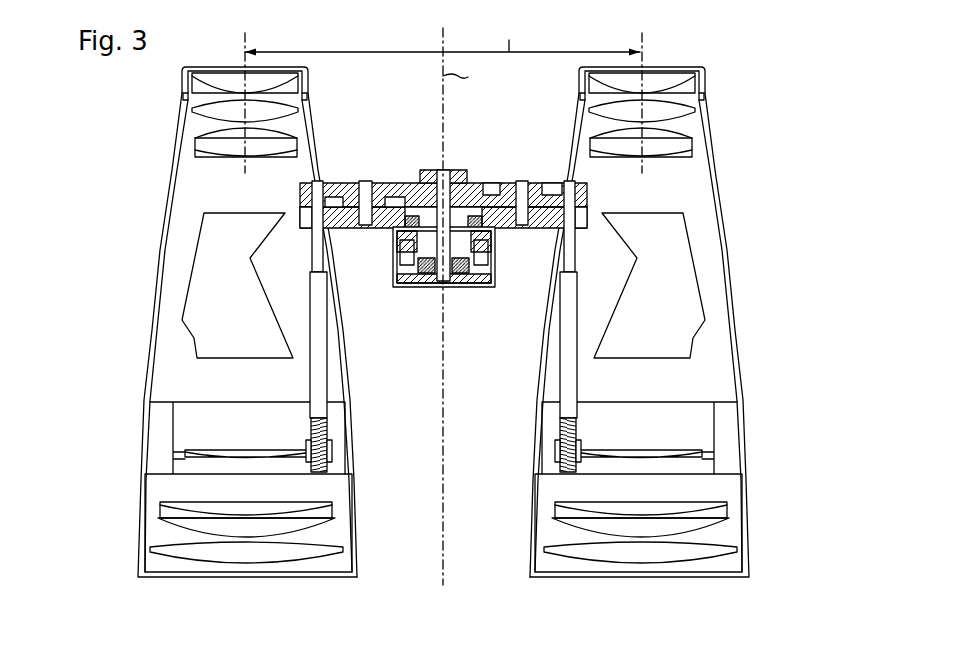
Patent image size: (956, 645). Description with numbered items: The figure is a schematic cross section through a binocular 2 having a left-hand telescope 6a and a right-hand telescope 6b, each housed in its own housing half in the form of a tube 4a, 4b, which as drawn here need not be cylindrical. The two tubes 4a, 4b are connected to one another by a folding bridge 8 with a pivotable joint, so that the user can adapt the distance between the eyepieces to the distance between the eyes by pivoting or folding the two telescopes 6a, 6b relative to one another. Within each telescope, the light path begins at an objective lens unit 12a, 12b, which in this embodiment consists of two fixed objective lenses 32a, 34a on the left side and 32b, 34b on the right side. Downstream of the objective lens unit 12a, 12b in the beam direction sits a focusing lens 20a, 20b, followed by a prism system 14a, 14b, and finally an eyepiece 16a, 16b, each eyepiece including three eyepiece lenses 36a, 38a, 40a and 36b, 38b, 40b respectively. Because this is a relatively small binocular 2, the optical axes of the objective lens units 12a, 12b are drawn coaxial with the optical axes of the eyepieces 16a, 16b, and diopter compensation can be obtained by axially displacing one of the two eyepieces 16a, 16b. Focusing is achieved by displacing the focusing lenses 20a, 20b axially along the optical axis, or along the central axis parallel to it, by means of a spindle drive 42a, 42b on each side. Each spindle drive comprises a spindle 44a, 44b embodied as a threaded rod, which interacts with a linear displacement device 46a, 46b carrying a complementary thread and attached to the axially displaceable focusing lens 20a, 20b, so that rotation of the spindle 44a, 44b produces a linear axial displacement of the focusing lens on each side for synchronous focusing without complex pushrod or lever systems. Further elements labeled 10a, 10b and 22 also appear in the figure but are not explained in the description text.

The binocular 2 is at (742, 37).
The left-hand tube 4a is at (157, 283).
The right-hand tube 4b is at (733, 273).
The left-hand telescope 6a is at (155, 313).
The right-hand telescope 6b is at (735, 308).
The folding bridge 8 is at (504, 151).
The first telescope body 10a is at (179, 209).
The second telescope body 10b is at (711, 214).
The objective lens unit 12a is at (147, 542).
The objective lens unit 12b is at (743, 539).
The prism system 14a is at (200, 245).
The prism system 14b is at (690, 238).
The eyepiece 16a is at (187, 136).
The eyepiece 16b is at (699, 131).
The focusing lens 20a is at (183, 454).
The focusing lens 20b is at (703, 452).
The focusing drive housing 22 is at (412, 290).
The fixed objective lens 32a is at (148, 550).
The fixed objective lens 32b is at (740, 547).
The fixed objective lens 34a is at (160, 520).
The fixed objective lens 34b is at (732, 518).
The eyepiece lens 36a is at (195, 145).
The eyepiece lens 36b is at (690, 150).
The eyepiece lens 38a is at (193, 108).
The eyepiece lens 38b is at (695, 107).
The eyepiece lens 40a is at (195, 78).
The eyepiece lens 40b is at (693, 77).
The spindle drive 42a is at (321, 358).
The spindle drive 42b is at (564, 358).
The spindle 44a is at (328, 425).
The spindle 44b is at (561, 410).
The linear displacement device 46a is at (312, 440).
The linear displacement device 46b is at (578, 445).